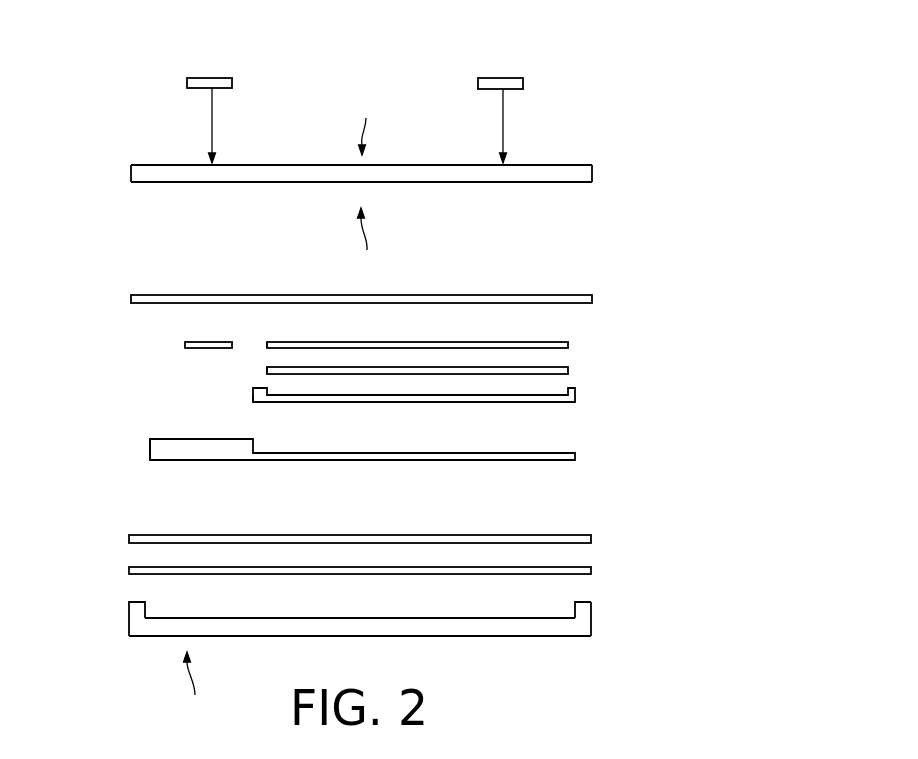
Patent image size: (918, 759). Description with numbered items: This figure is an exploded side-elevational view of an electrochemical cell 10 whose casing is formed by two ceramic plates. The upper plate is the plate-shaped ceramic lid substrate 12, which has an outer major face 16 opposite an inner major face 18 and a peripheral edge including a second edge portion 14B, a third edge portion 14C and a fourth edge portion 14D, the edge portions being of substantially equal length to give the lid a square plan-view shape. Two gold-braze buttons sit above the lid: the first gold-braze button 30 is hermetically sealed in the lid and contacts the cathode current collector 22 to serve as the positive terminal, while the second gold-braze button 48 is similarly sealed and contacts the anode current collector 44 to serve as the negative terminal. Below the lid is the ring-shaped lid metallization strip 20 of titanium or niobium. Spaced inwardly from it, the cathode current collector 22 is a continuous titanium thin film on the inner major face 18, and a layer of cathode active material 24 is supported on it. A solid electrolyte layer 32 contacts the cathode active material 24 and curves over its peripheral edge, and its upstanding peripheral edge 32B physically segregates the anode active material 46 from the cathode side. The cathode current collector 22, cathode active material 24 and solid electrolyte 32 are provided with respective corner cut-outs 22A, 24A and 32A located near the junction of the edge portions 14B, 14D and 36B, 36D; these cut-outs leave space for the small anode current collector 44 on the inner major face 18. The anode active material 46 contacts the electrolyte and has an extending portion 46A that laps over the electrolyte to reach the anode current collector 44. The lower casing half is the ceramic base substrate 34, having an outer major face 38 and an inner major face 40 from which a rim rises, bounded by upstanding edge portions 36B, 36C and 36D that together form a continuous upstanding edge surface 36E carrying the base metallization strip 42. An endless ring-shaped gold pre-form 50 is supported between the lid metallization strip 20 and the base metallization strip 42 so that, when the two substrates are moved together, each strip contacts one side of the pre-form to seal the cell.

The electrochemical cell 10 is at (679, 94).
The lid substrate 12 is at (616, 166).
The lid second edge portion 14B is at (406, 180).
The lid third edge portion 14C is at (594, 175).
The lid fourth edge portion 14D is at (131, 173).
The outer major face 16 is at (374, 123).
The inner major face 18 is at (373, 244).
The lid metallization strip 20 is at (592, 298).
The cathode current collector 22 is at (568, 344).
The cathode current collector corner cut-out 22A is at (257, 328).
The cathode active material 24 is at (568, 369).
The cathode active material corner cut-out 24A is at (240, 373).
The first gold-braze button 30 is at (503, 77).
The solid electrolyte layer 32 is at (575, 398).
The solid electrolyte corner cut-out 32A is at (251, 422).
The upstanding peripheral edge 32B is at (253, 392).
The base substrate 34 is at (706, 616).
The base second upstanding edge portion 36B is at (513, 636).
The base third upstanding edge portion 36C is at (591, 610).
The base fourth upstanding edge portion 36D is at (129, 607).
The upstanding edge surface 36E is at (591, 603).
The base outer major face 38 is at (194, 691).
The base inner major face 40 is at (351, 607).
The base metallization strip 42 is at (591, 570).
The anode current collector 44 is at (185, 344).
The anode active material 46 is at (575, 456).
The extending portion 46A is at (150, 450).
The second gold-braze button 48 is at (212, 77).
The gold pre-form 50 is at (129, 538).